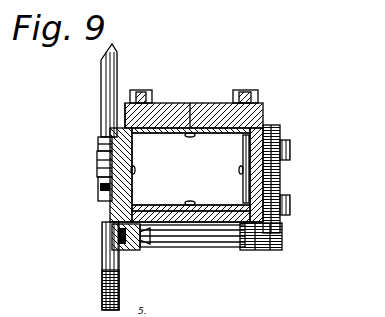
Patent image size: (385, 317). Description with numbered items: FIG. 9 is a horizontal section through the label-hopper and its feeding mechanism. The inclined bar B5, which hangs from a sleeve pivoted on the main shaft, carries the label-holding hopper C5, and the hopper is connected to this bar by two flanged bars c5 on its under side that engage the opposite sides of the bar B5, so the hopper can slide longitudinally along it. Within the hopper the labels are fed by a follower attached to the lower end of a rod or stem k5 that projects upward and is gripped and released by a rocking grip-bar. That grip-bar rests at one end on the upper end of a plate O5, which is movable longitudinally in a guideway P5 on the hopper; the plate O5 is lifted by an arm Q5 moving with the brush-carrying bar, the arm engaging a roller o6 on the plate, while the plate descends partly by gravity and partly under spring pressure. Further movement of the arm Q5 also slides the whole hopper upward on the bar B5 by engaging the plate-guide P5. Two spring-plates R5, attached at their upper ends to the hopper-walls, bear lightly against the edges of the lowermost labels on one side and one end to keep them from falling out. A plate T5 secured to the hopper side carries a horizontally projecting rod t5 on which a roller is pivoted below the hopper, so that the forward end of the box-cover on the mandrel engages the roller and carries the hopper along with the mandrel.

The guideway P5 is at (99, 148).
The plate O5 is at (104, 172).
The roller o6 is at (99, 185).
The inclined bar B5 is at (207, 106).
The label-holding hopper C5 is at (190, 169).
The flanged bars c5 is at (165, 94).
The spring-plates R5 is at (282, 132).
The rod t5 is at (224, 244).
The plate T5 is at (284, 238).
The arm Q5 is at (101, 260).
The follower-rod k5 is at (69, 303).